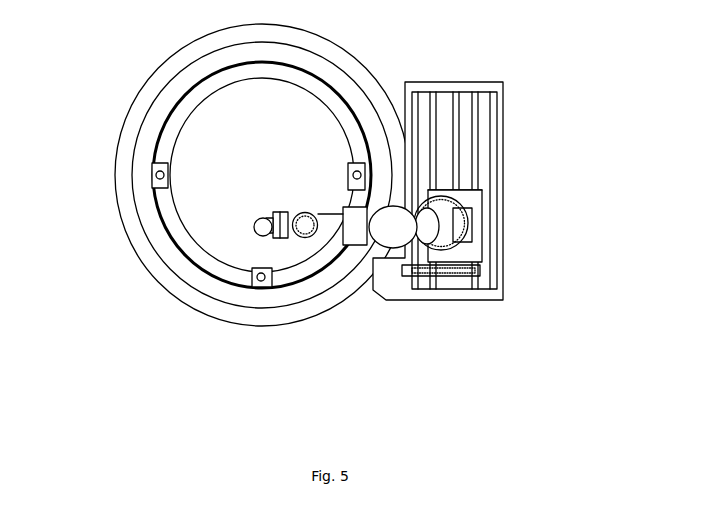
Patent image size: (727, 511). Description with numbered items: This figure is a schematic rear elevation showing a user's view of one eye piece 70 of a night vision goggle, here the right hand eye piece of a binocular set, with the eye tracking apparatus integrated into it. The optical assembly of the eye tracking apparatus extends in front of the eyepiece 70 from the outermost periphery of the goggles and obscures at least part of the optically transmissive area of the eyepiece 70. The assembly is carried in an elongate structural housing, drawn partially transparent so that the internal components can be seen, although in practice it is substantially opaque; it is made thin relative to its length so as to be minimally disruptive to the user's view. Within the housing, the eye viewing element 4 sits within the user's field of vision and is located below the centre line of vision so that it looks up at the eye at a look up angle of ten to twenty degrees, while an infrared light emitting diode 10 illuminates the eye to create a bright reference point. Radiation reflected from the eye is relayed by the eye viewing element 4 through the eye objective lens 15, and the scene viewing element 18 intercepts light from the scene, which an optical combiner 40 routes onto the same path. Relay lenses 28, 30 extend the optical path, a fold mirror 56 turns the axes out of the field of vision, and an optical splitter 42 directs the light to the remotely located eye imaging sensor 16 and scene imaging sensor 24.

The eye viewing element 4 is at (253, 227).
The eyepiece 70 is at (268, 176).
The infrared light emitting diode 10 is at (155, 190).
The eye imaging sensor 16 is at (474, 228).
The scene imaging sensor 24 is at (462, 269).
The optical splitter 42 is at (445, 212).
The relay lens 28 is at (418, 247).
The fold mirror 56 is at (394, 249).
The relay lens 30 is at (355, 245).
The optical combiner 40 is at (305, 226).
The scene viewing element 18 is at (296, 240).
The eye objective lens 15 is at (373, 250).